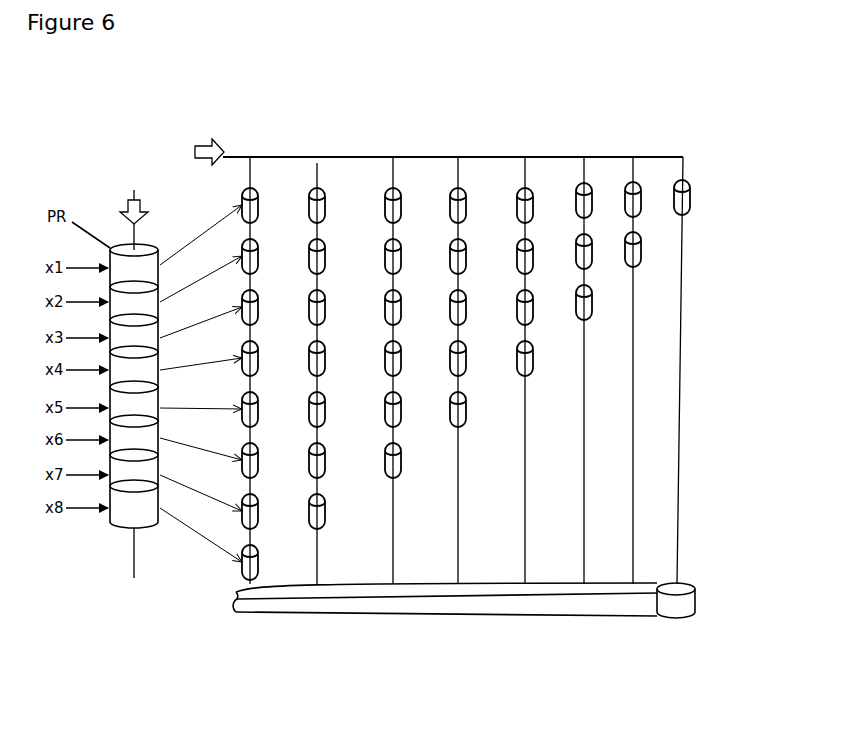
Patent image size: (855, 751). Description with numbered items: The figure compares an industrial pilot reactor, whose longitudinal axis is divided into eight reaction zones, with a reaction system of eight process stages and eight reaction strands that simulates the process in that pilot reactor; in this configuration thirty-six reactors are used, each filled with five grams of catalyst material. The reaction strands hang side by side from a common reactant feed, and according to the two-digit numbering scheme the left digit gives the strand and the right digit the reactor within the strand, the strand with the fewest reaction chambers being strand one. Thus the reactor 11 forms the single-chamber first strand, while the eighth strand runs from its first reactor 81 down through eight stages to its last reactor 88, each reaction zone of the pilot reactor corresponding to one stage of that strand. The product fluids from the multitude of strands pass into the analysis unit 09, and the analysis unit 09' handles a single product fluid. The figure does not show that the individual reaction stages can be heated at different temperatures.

The reactor of reaction strand eight, process stage one 81 is at (258, 207).
The reactor of reaction strand one, process stage one 11 is at (688, 175).
The reactor of reaction strand eight, process stage eight 88 is at (241, 562).
The analysis unit for a multitude of product fluids 09 is at (445, 642).
The analysis unit for a single product fluid 09' is at (688, 621).